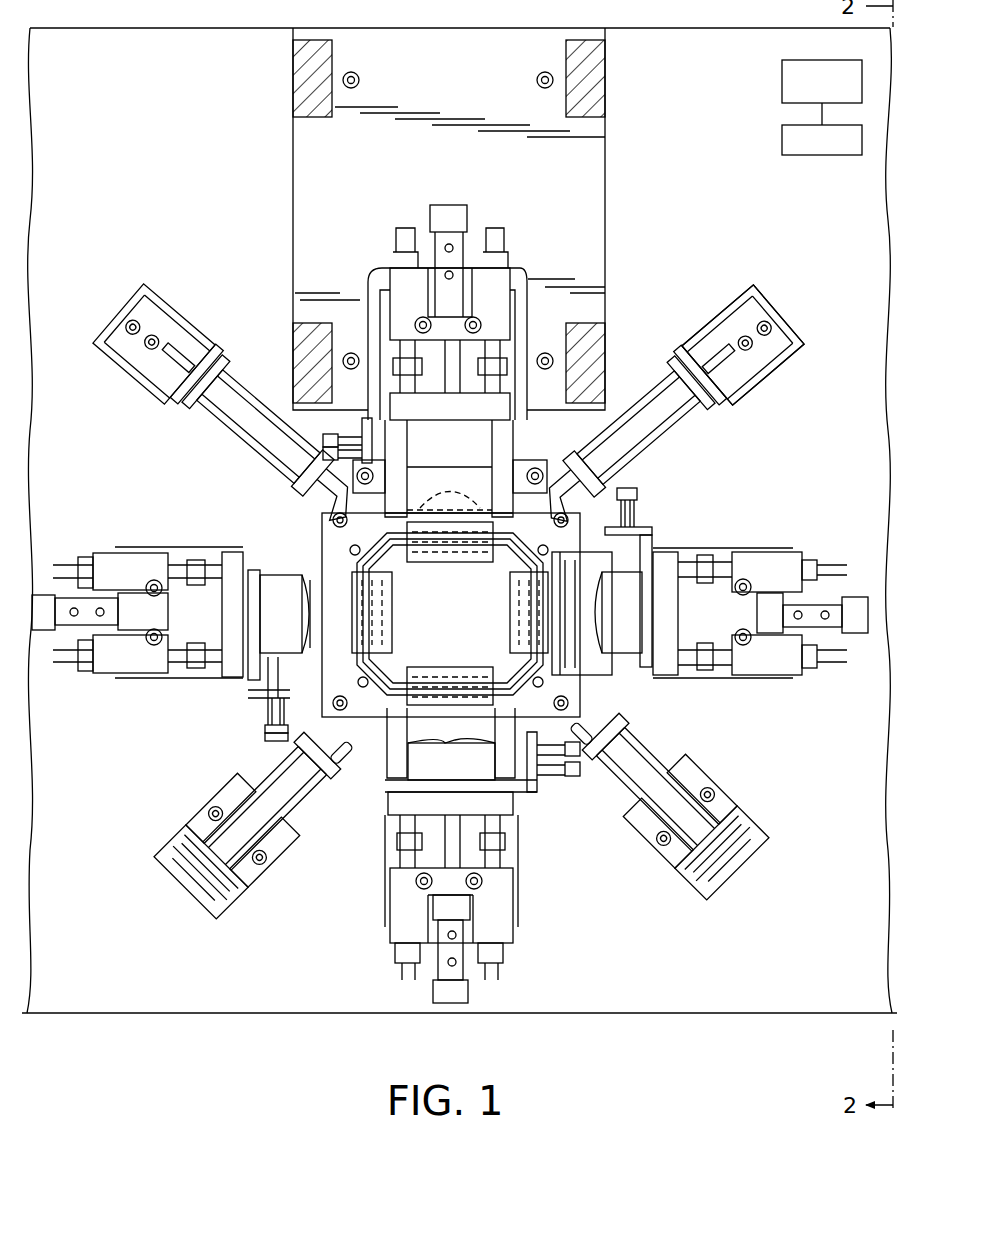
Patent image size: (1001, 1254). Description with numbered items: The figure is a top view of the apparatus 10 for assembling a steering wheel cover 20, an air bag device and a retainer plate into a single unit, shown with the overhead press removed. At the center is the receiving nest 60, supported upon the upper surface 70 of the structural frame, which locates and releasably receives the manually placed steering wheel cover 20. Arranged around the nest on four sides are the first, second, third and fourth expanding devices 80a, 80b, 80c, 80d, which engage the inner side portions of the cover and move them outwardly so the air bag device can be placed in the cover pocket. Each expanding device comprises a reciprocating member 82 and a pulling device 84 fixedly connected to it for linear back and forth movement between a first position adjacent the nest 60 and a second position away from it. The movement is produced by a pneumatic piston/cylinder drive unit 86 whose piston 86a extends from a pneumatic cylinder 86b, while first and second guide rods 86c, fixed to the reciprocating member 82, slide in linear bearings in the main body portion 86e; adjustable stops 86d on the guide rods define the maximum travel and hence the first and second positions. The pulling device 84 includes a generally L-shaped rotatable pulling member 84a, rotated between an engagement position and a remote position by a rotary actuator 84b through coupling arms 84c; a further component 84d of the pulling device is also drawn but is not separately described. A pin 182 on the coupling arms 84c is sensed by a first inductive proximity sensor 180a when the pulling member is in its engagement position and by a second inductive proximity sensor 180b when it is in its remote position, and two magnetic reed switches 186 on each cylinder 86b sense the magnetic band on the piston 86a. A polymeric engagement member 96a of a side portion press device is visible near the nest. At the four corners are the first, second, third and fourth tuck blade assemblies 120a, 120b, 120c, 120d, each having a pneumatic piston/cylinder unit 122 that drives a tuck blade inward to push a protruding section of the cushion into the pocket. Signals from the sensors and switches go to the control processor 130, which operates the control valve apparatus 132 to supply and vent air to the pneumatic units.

The apparatus 10 is at (662, 294).
The steering wheel cover 20 is at (405, 705).
The receiving nest 60 is at (560, 692).
The upper surface 70 is at (681, 1014).
The first expanding device 80a is at (715, 528).
The second expanding device 80b is at (528, 880).
The third expanding device 80c is at (182, 690).
The fourth expanding device 80d is at (551, 436).
The reciprocating member 82 is at (497, 403).
The pulling device 84 is at (647, 514).
The rotatable pulling member 84a is at (508, 565).
The rotary actuator 84b is at (632, 630).
The coupling arms 84c is at (325, 560).
The jaw 84d is at (575, 555).
The pneumatic piston/cylinder drive unit 86 is at (788, 552).
The piston 86a is at (732, 658).
The pneumatic cylinder 86b is at (840, 598).
The guide rods 86c is at (702, 553).
The adjustable stops 86d is at (710, 562).
The main body portion 86e is at (792, 662).
The polymeric engagement member 96a is at (566, 708).
The first tuck blade assembly 120a is at (760, 809).
The second tuck blade assembly 120b is at (188, 893).
The third tuck blade assembly 120c is at (125, 283).
The fourth tuck blade assembly 120d is at (795, 318).
The pneumatic piston/cylinder unit 122 is at (775, 363).
The control processor 130 is at (782, 78).
The control valve apparatus 132 is at (782, 140).
The first inductive proximity sensor 180a is at (265, 720).
The second inductive proximity sensor 180b is at (278, 740).
The pin 182 is at (268, 680).
The magnetic reed switches 186 is at (800, 619).